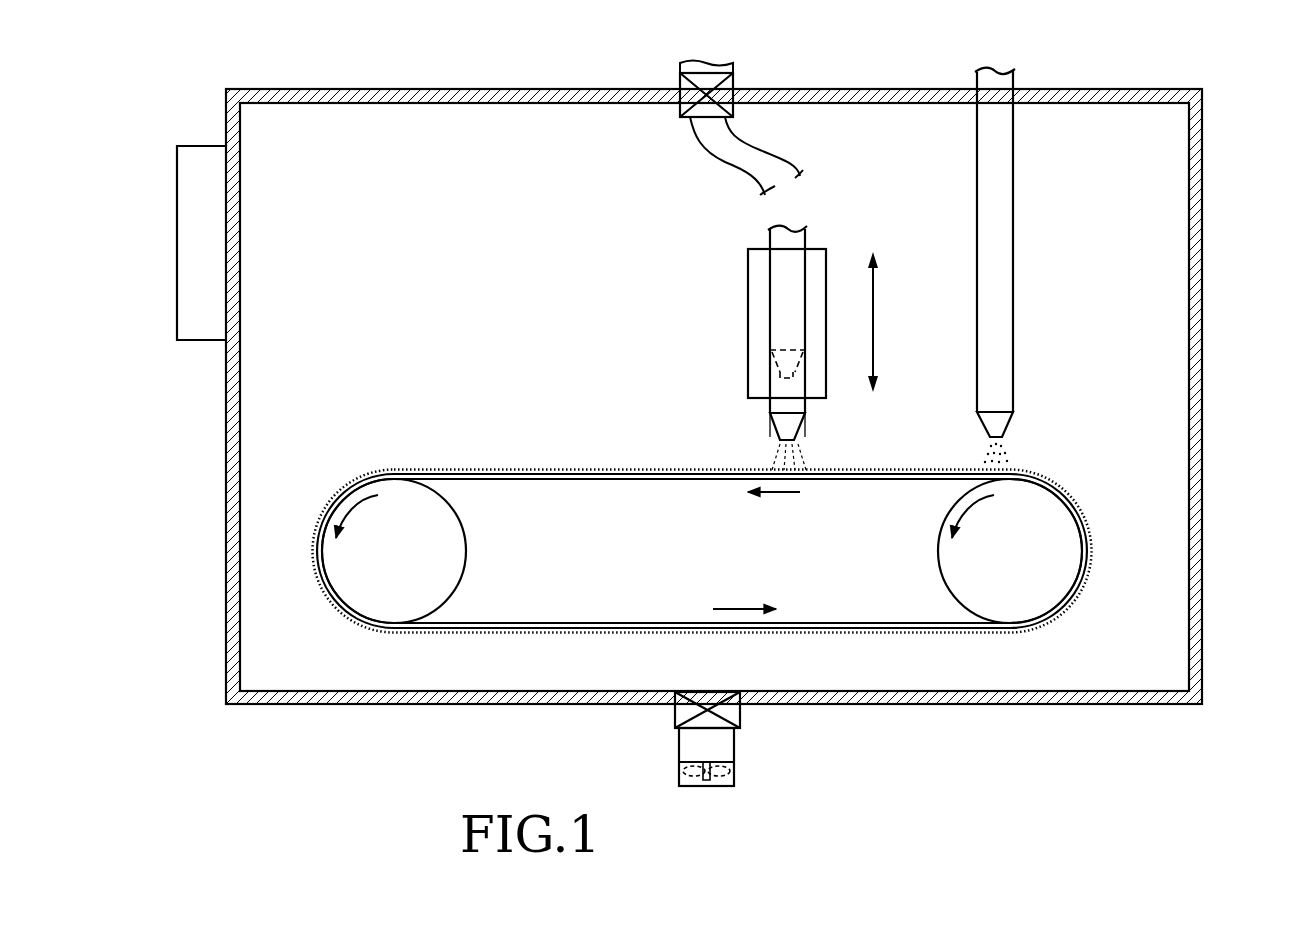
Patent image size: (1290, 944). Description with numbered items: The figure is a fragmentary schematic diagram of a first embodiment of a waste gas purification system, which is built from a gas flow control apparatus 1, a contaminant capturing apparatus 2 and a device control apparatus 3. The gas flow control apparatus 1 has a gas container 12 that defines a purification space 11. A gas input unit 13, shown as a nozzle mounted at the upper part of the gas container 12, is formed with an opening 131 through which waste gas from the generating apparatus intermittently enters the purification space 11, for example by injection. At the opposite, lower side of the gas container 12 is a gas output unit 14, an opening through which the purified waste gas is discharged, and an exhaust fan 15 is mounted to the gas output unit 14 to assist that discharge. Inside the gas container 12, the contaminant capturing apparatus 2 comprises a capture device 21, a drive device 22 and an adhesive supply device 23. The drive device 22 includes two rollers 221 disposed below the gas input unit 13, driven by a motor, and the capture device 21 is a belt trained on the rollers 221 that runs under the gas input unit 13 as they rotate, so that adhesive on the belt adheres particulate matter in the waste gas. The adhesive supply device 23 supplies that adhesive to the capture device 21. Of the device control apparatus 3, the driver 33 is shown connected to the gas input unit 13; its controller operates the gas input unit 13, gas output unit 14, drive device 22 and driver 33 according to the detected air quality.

The gas flow control apparatus 1 is at (1224, 150).
The purification space 11 is at (1148, 278).
The gas container 12 is at (1197, 222).
The gas input unit 13 is at (780, 392).
The opening 131 is at (785, 437).
The gas output unit 14 is at (741, 697).
The exhaust fan 15 is at (681, 776).
The contaminant capturing apparatus 2 is at (1078, 465).
The capture device 21 is at (643, 479).
The drive device 22 is at (1048, 591).
The rollers 221 is at (380, 609).
The adhesive supply device 23 is at (1001, 232).
The device control apparatus 3 is at (173, 257).
The driver 33 is at (818, 275).